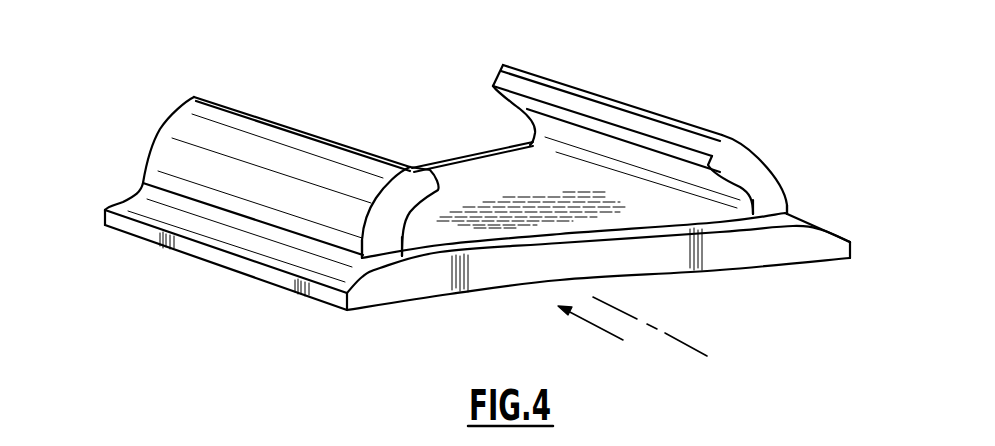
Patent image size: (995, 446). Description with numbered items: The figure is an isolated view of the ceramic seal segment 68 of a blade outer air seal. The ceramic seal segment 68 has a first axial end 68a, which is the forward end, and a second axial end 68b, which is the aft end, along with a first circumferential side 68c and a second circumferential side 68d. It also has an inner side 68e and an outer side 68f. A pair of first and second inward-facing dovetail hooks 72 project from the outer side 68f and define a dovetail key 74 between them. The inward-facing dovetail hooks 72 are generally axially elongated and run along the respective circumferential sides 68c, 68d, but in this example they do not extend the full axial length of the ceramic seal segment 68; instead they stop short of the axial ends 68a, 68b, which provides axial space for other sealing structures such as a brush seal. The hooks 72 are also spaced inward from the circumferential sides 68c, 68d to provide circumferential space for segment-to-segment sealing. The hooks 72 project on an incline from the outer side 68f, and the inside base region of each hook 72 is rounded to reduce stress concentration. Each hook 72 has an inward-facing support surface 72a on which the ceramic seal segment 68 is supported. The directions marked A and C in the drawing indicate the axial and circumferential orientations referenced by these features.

The ceramic seal segment 68 is at (489, 204).
The first axial end 68a is at (363, 300).
The second axial end 68b is at (105, 208).
The first circumferential side 68c is at (850, 249).
The second circumferential side 68d is at (287, 283).
The inner side 68e is at (466, 295).
The outer side 68f is at (468, 173).
The inward-facing dovetail hooks 72 is at (190, 102).
The inward-facing support surfaces 72a is at (420, 205).
The dovetail key 74 is at (514, 169).
The axis A is at (694, 353).
The direction C is at (600, 335).